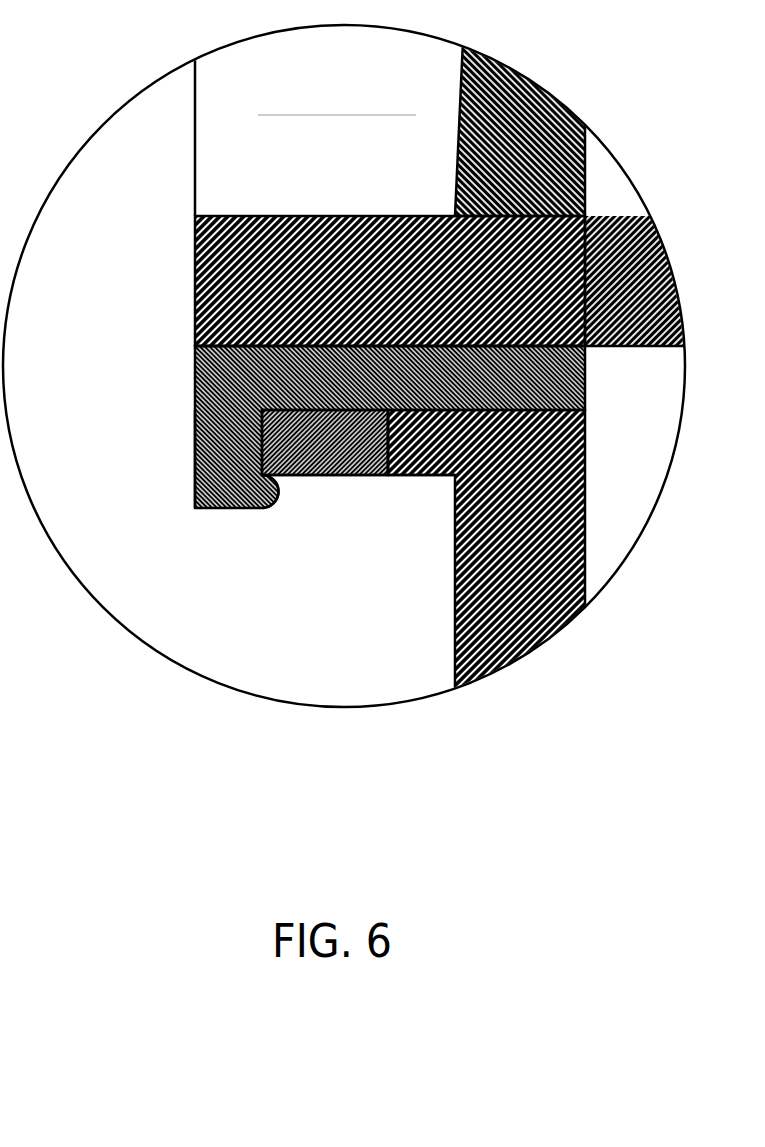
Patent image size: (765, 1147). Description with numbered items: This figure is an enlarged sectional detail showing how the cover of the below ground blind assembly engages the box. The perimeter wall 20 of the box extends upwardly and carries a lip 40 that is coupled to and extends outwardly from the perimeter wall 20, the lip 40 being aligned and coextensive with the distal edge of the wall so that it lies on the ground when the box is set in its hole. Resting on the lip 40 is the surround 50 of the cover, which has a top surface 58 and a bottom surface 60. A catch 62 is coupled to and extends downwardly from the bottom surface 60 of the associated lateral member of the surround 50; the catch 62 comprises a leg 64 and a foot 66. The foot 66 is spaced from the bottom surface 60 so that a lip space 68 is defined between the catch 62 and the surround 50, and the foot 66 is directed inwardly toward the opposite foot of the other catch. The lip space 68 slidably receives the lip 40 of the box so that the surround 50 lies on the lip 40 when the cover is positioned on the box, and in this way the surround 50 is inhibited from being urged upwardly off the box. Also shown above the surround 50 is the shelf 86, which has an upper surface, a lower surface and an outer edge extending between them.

The perimeter wall 20 is at (455, 634).
The lip 40 is at (300, 477).
The surround 50 is at (245, 347).
The top surface 58 is at (388, 414).
The bottom surface 60 is at (290, 347).
The catch 62 is at (178, 429).
The leg 64 is at (195, 460).
The foot 66 is at (261, 509).
The lip space 68 is at (356, 477).
The shelf 86 is at (358, 216).